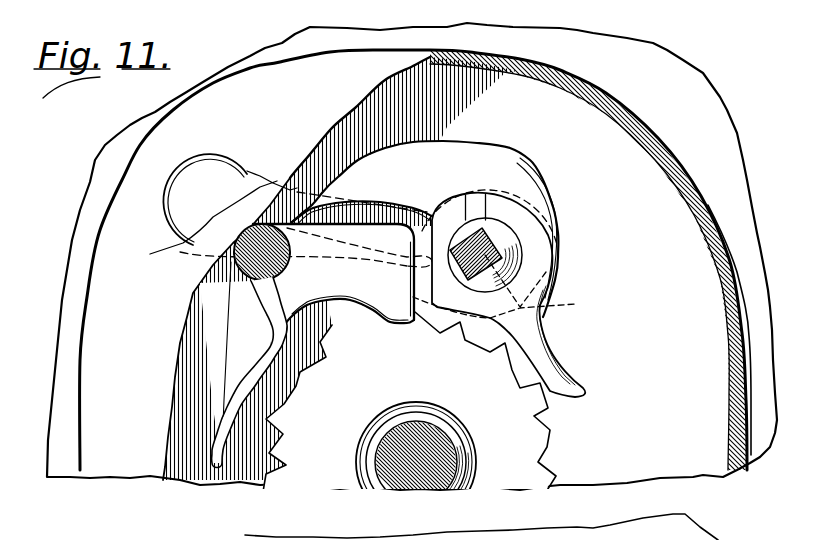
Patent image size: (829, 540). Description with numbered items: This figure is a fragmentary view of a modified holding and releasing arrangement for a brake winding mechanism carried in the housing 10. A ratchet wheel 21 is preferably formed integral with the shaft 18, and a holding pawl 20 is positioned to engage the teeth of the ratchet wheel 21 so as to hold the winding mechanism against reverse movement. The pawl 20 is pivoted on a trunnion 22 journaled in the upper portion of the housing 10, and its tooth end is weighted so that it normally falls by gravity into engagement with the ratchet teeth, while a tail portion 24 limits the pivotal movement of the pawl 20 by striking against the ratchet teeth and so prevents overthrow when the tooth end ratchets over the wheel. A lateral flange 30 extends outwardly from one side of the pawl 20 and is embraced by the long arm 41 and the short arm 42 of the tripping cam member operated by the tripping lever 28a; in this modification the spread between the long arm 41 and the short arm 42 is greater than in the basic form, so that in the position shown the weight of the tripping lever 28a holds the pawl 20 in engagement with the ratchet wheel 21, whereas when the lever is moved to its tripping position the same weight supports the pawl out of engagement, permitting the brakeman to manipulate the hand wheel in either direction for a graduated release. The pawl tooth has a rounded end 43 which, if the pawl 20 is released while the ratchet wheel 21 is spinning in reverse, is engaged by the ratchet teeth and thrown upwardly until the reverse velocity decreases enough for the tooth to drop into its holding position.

The housing 10 is at (102, 482).
The shaft 18 is at (424, 485).
The pawl 20 is at (367, 317).
The ratchet wheel 21 is at (535, 480).
The trunnion 22 is at (235, 259).
The tail portion 24 is at (213, 442).
The tripping lever 28a is at (205, 210).
The lateral flange 30 is at (342, 259).
The long arm 41 is at (487, 162).
The short arm 42 is at (509, 286).
The rounded end 43 is at (407, 292).